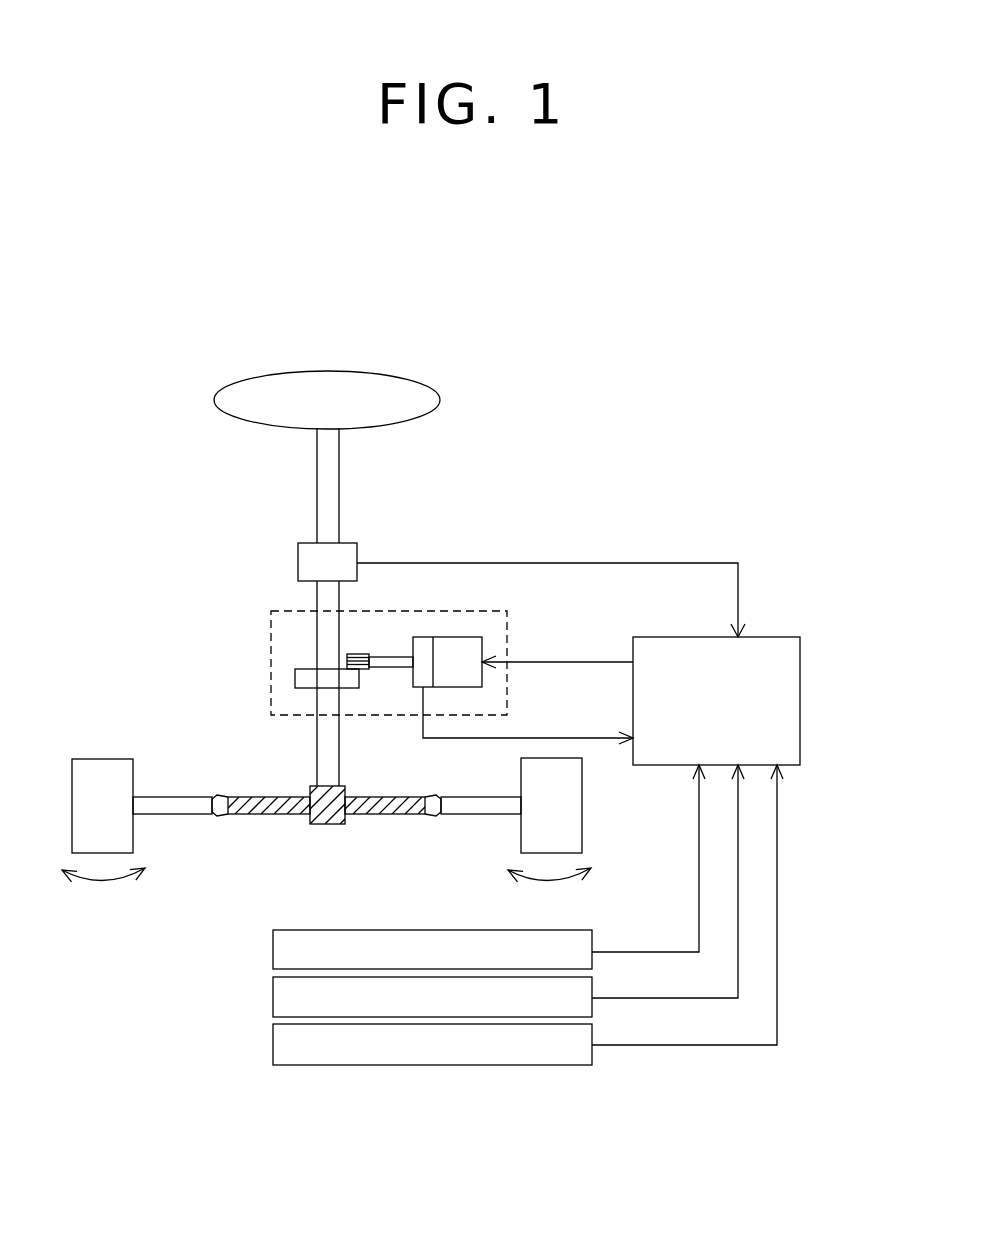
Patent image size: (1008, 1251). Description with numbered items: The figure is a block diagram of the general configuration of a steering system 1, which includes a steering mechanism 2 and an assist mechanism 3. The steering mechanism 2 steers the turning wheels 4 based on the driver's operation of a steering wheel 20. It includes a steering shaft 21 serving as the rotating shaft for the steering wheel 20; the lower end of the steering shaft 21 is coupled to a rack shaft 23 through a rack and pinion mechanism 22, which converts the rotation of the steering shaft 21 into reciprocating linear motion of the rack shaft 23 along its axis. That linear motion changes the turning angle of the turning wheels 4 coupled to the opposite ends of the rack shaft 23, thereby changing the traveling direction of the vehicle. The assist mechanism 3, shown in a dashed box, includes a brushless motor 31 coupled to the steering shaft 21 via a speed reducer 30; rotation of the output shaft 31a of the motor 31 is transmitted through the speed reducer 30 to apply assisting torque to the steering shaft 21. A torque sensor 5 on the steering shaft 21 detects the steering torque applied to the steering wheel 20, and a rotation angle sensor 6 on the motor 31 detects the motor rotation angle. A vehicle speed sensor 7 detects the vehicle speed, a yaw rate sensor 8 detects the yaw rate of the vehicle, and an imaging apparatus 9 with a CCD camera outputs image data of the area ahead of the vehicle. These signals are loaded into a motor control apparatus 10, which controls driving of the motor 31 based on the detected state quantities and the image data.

The steering system 1 is at (167, 467).
The steering mechanism 2 is at (298, 523).
The assist mechanism 3 is at (271, 642).
The turning wheels 4 is at (134, 766).
The torque sensor 5 is at (298, 560).
The rotation angle sensor 6 is at (412, 676).
The vehicle speed sensor 7 is at (273, 950).
The yaw rate sensor 8 is at (273, 997).
The imaging apparatus 9 is at (273, 1044).
The motor control apparatus 10 is at (800, 700).
The steering wheel 20 is at (345, 372).
The steering shaft 21 is at (317, 456).
The rack and pinion mechanism 22 is at (367, 810).
The rack shaft 23 is at (460, 817).
The speed reducer 30 is at (334, 668).
The motor 31 is at (460, 637).
The output shaft 31a is at (403, 653).